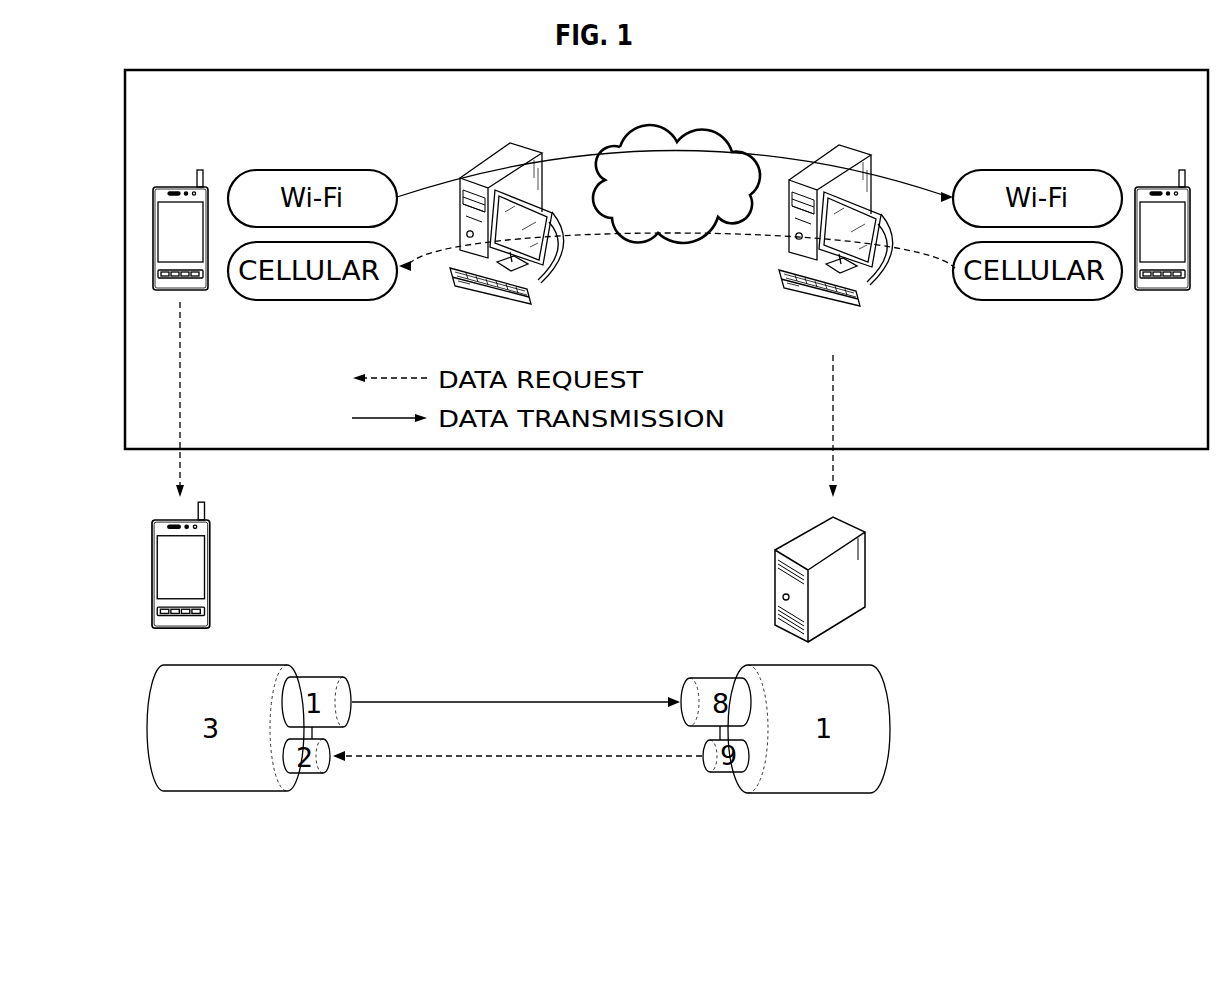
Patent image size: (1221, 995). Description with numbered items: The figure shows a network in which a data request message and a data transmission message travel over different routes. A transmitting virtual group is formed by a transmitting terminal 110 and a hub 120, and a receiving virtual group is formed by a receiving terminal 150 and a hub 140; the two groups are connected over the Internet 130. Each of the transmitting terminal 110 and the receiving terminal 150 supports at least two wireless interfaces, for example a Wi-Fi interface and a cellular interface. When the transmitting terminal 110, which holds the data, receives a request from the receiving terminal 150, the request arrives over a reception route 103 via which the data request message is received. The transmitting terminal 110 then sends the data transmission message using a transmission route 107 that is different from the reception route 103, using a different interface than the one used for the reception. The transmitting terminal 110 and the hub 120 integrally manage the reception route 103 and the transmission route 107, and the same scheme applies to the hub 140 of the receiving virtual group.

The transmitting terminal 110 is at (178, 183).
The hub 120 is at (485, 165).
The Internet 130 is at (695, 242).
The hub 140 is at (827, 158).
The receiving terminal 150 is at (1160, 182).
The transmission route 107 is at (573, 158).
The reception route 103 is at (600, 226).